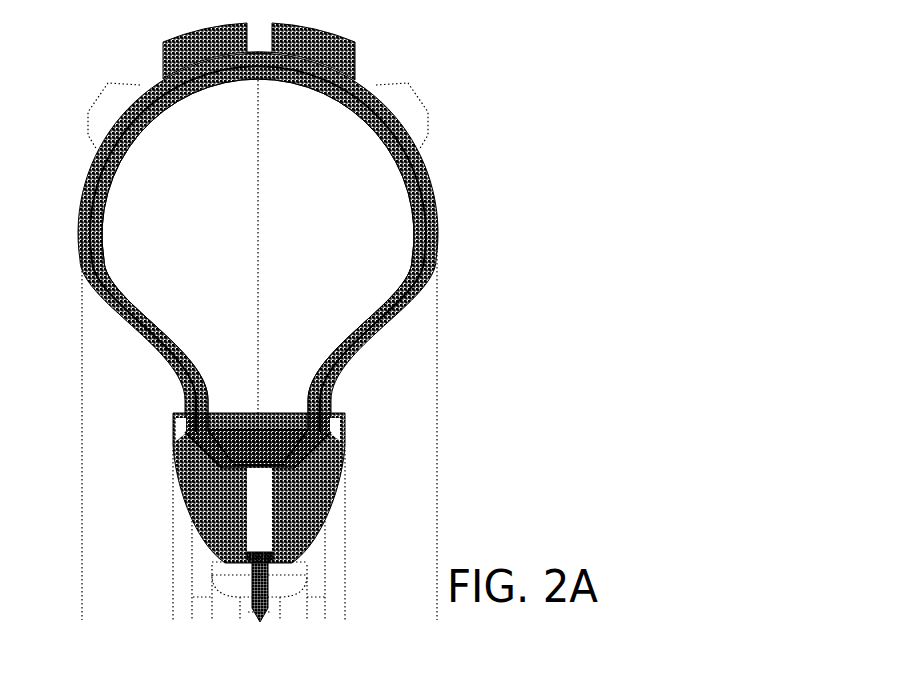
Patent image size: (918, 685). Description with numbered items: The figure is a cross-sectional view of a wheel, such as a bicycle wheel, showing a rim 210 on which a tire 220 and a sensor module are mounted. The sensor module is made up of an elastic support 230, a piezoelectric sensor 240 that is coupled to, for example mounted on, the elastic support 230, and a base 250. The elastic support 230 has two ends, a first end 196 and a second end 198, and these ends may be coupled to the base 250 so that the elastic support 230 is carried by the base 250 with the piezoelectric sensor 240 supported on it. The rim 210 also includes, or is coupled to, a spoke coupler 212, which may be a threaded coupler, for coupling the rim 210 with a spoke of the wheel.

The first end 196 is at (211, 450).
The second end 198 is at (297, 452).
The rim 210 is at (328, 505).
The spoke coupler 212 is at (257, 577).
The tire 220 is at (438, 193).
The elastic support 230 is at (137, 296).
The piezoelectric sensor 240 is at (178, 98).
The base 250 is at (245, 442).